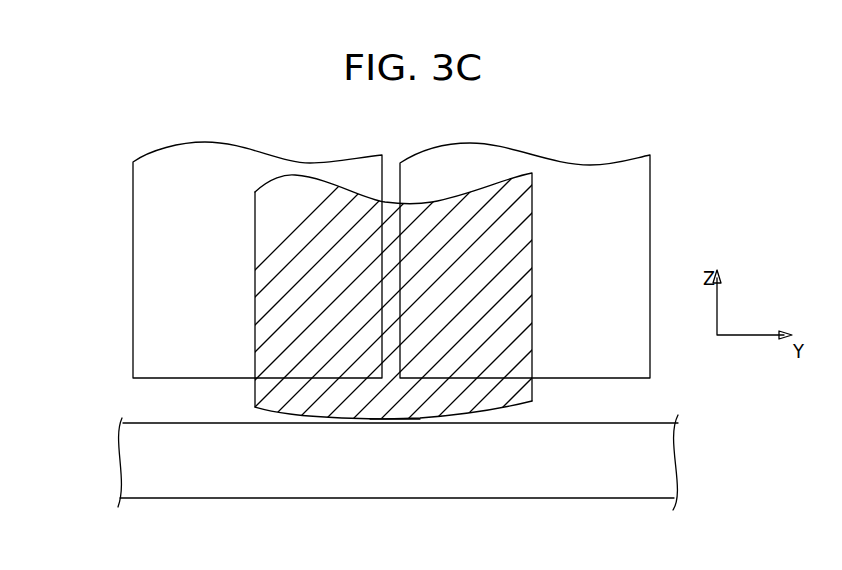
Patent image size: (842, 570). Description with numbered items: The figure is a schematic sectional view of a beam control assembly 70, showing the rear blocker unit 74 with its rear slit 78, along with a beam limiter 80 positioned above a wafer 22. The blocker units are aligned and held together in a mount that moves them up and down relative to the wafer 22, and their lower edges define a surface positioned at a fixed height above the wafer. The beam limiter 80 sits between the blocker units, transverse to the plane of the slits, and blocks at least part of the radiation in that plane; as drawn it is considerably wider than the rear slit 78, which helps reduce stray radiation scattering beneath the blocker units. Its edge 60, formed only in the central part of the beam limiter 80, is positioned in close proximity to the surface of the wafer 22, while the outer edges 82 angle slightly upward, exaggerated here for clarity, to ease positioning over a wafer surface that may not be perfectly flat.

The beam control assembly 70 is at (135, 156).
The rear blocker unit 74 is at (650, 199).
The rear slit 78 is at (391, 170).
The beam limiter 80 is at (532, 218).
The outer edges 82 is at (265, 408).
The edge 60 is at (395, 420).
The wafer 22 is at (678, 468).